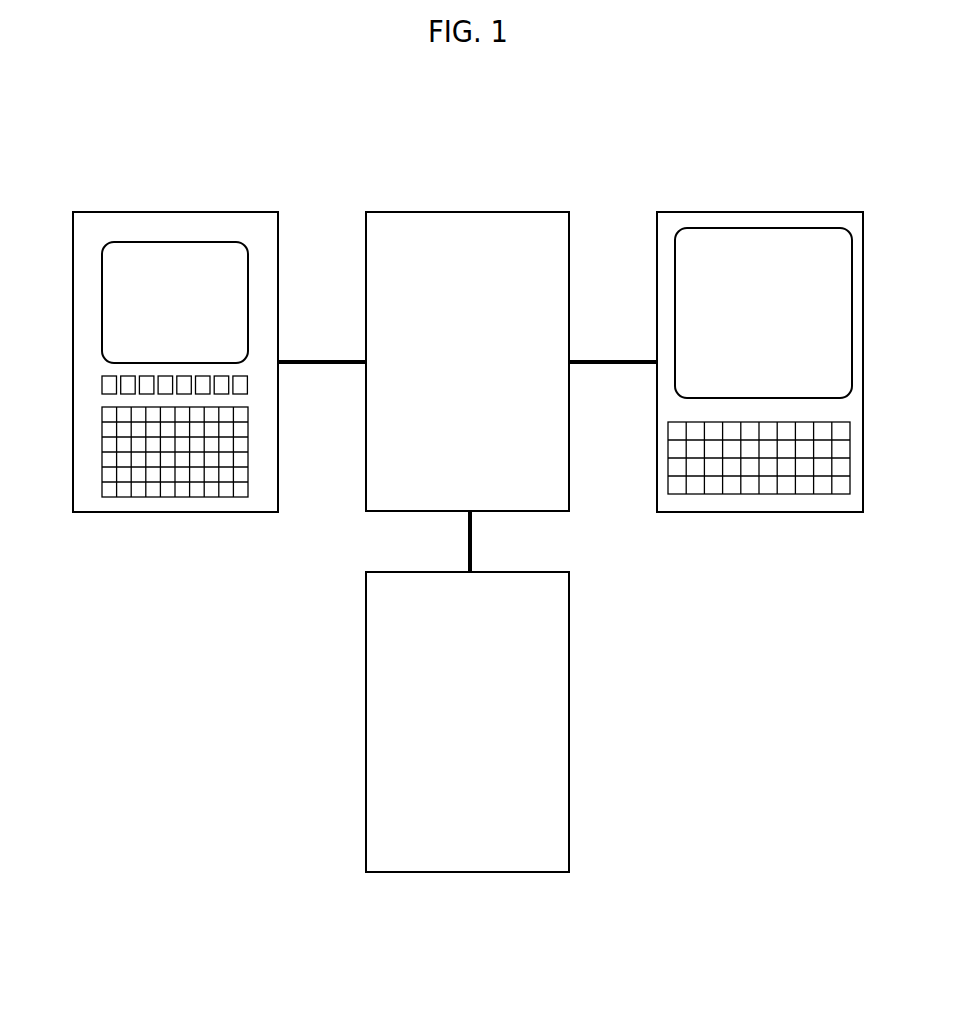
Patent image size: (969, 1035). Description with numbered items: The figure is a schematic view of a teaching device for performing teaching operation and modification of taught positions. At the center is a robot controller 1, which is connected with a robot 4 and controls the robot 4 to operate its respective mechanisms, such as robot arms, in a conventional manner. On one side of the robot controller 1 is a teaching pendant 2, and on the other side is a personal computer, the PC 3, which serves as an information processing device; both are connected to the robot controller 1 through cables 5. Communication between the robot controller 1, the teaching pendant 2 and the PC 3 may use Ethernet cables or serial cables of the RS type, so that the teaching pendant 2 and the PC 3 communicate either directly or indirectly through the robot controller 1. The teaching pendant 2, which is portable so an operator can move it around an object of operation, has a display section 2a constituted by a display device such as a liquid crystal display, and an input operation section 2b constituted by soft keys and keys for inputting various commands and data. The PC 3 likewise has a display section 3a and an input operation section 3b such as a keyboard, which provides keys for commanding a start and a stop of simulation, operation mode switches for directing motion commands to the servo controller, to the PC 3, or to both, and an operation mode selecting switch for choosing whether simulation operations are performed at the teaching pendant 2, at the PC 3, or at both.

The robot controller 1 is at (422, 212).
The teaching pendant 2 is at (130, 212).
The display section 2a is at (218, 242).
The input operation section 2b is at (167, 497).
The PC 3 is at (795, 212).
The display section 3a is at (715, 228).
The input operation section 3b is at (757, 494).
The robot 4 is at (366, 738).
The cables 5 is at (303, 364).